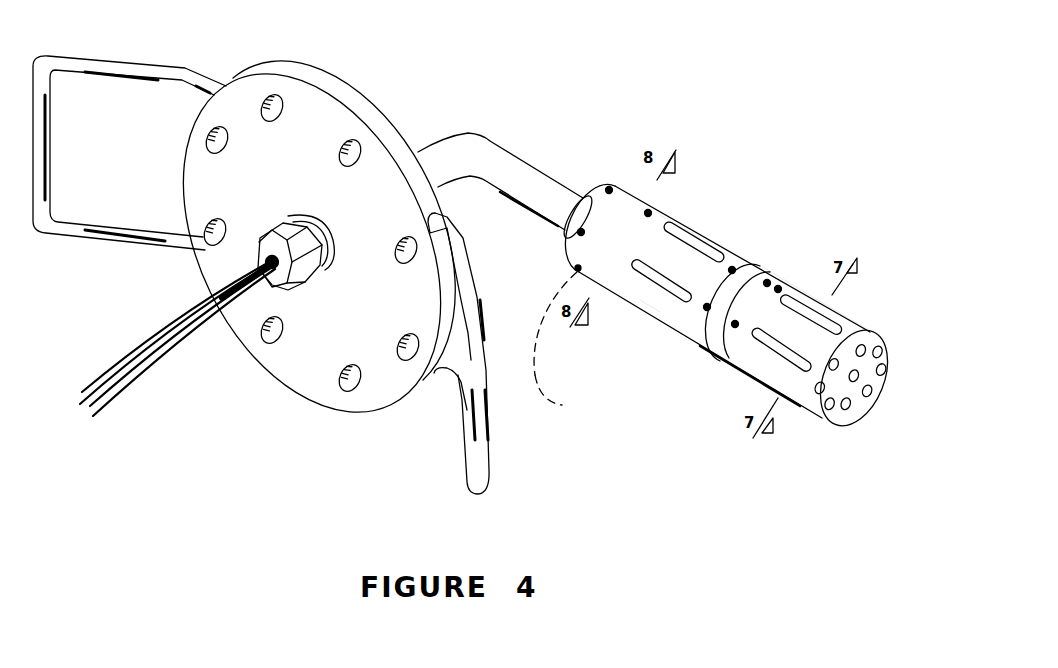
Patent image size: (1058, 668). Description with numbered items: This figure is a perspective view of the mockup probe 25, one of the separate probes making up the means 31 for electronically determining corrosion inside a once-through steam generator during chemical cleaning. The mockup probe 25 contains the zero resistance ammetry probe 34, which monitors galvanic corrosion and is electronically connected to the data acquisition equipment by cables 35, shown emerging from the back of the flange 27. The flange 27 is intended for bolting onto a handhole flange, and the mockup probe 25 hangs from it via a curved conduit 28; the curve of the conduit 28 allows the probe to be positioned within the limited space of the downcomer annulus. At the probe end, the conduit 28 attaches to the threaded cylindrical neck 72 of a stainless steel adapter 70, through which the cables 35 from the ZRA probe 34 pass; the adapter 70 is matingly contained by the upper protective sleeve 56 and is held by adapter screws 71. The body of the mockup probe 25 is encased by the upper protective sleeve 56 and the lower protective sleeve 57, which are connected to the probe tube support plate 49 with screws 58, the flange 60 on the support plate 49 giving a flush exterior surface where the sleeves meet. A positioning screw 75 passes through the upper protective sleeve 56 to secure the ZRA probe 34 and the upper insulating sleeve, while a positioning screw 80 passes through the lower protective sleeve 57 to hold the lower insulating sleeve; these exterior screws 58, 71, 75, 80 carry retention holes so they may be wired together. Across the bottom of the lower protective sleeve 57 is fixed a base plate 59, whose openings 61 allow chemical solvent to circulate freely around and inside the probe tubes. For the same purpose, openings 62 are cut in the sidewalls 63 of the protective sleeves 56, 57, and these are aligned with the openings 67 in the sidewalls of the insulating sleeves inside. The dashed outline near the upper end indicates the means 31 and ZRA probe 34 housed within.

The mockup probe 25 is at (740, 78).
The flange 27 is at (313, 80).
The curved conduit 28 is at (508, 170).
The means for electronically determining corrosion 31 is at (573, 345).
The zero resistance ammetry (ZRA) probe 34 is at (548, 390).
The cables 35 is at (172, 360).
The probe tube support plate 49 is at (760, 267).
The upper protective sleeve 56 is at (683, 222).
The lower protective sleeve 57 is at (840, 308).
The screws 58 is at (723, 361).
The base plate 59 is at (862, 404).
The flange 60 is at (733, 327).
The openings 61 is at (865, 347).
The openings 62 is at (708, 248).
The sidewalls 63 is at (648, 303).
The openings 67 is at (758, 342).
The adapter 70 is at (631, 141).
The adapter screws 71 is at (610, 188).
The threaded cylindrical neck 72 is at (577, 232).
The positioning screw 75 is at (681, 221).
The positioning screw 80 is at (766, 282).